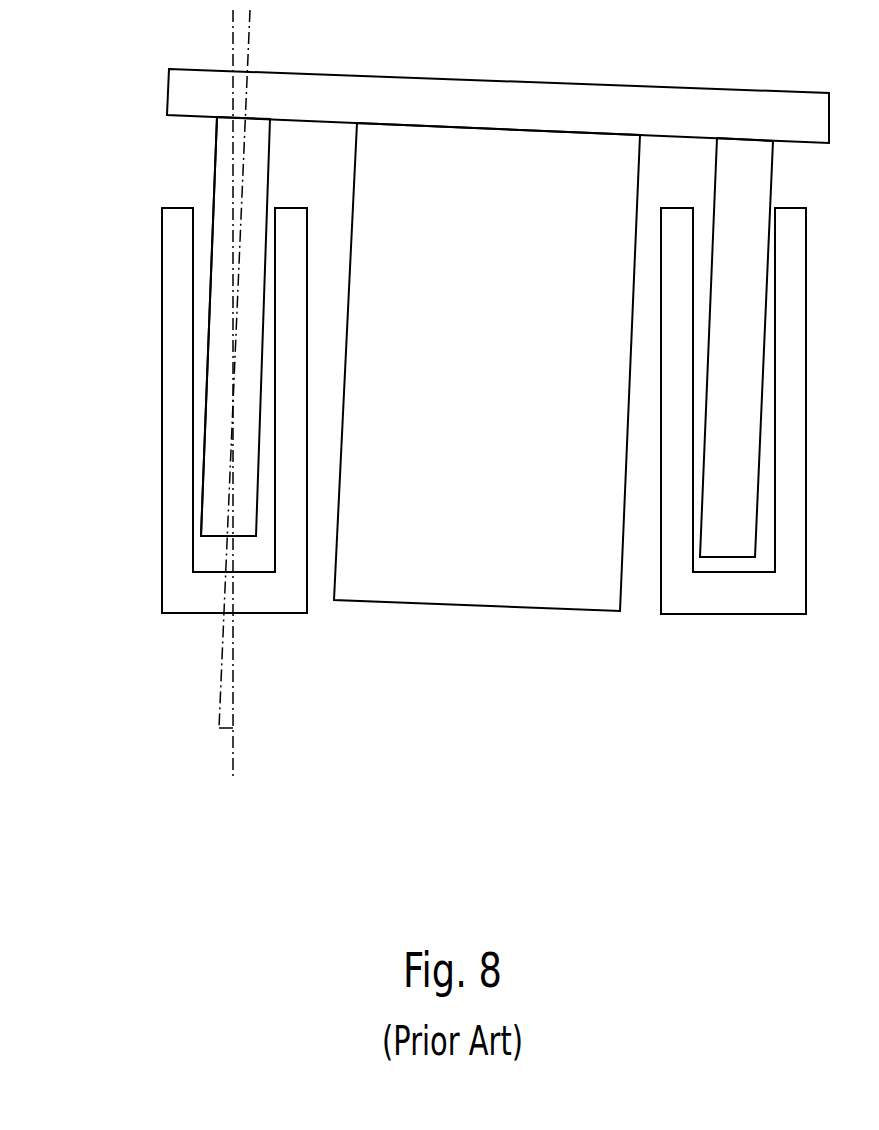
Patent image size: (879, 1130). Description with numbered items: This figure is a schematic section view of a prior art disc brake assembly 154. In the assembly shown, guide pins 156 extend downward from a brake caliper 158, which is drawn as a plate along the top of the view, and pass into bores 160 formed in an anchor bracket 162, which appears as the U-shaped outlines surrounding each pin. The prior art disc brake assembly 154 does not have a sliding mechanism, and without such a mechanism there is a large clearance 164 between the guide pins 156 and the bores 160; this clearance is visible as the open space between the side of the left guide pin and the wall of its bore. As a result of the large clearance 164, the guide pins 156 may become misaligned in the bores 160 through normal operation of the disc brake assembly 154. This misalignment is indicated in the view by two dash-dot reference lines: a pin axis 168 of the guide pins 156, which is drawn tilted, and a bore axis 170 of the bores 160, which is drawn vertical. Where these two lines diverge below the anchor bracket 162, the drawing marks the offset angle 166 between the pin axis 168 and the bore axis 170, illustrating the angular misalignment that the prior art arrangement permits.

The prior art disc brake assembly 154 is at (104, 515).
The guide pins 156 is at (213, 172).
The brake caliper 158 is at (537, 83).
The bores 160 is at (275, 557).
The anchor bracket 162 is at (160, 363).
The large clearance 164 is at (203, 245).
The offset angle 166 is at (221, 731).
The pin axis 168 is at (220, 671).
The bore axis 170 is at (235, 754).